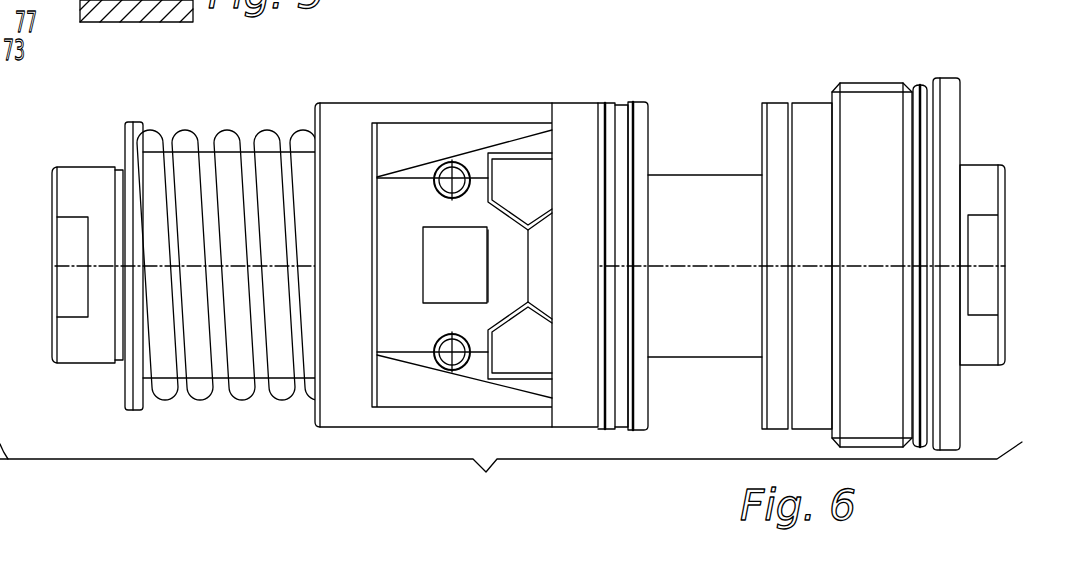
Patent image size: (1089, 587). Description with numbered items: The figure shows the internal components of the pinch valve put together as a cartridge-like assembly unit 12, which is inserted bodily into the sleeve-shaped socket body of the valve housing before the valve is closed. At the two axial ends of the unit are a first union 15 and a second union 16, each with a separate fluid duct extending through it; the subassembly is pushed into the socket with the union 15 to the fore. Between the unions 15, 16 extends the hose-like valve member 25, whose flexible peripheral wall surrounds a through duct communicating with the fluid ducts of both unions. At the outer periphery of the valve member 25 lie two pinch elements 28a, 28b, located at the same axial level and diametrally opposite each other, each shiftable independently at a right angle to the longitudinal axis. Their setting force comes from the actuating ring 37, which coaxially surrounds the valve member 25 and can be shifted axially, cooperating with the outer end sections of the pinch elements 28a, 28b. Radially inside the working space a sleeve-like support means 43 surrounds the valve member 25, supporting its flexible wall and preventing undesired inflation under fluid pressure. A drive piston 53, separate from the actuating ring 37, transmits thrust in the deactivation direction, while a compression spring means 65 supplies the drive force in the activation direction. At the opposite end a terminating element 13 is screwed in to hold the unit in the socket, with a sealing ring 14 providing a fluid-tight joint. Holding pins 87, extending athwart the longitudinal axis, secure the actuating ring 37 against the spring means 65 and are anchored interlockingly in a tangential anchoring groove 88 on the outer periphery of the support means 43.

The assembly unit 12 is at (511, 476).
The terminating element 13 is at (870, 115).
The sealing ring 14 is at (916, 88).
The first union 15 is at (86, 182).
The second union 16 is at (985, 188).
The valve member 25 is at (508, 243).
The pinch element 28a is at (536, 191).
The pinch element 28b is at (536, 336).
The actuating ring 37 is at (340, 136).
The support means 43 is at (718, 188).
The drive piston 53 is at (577, 128).
The spring means 65 is at (222, 141).
The holding pins 87 is at (438, 181).
The anchoring groove 88 is at (452, 200).